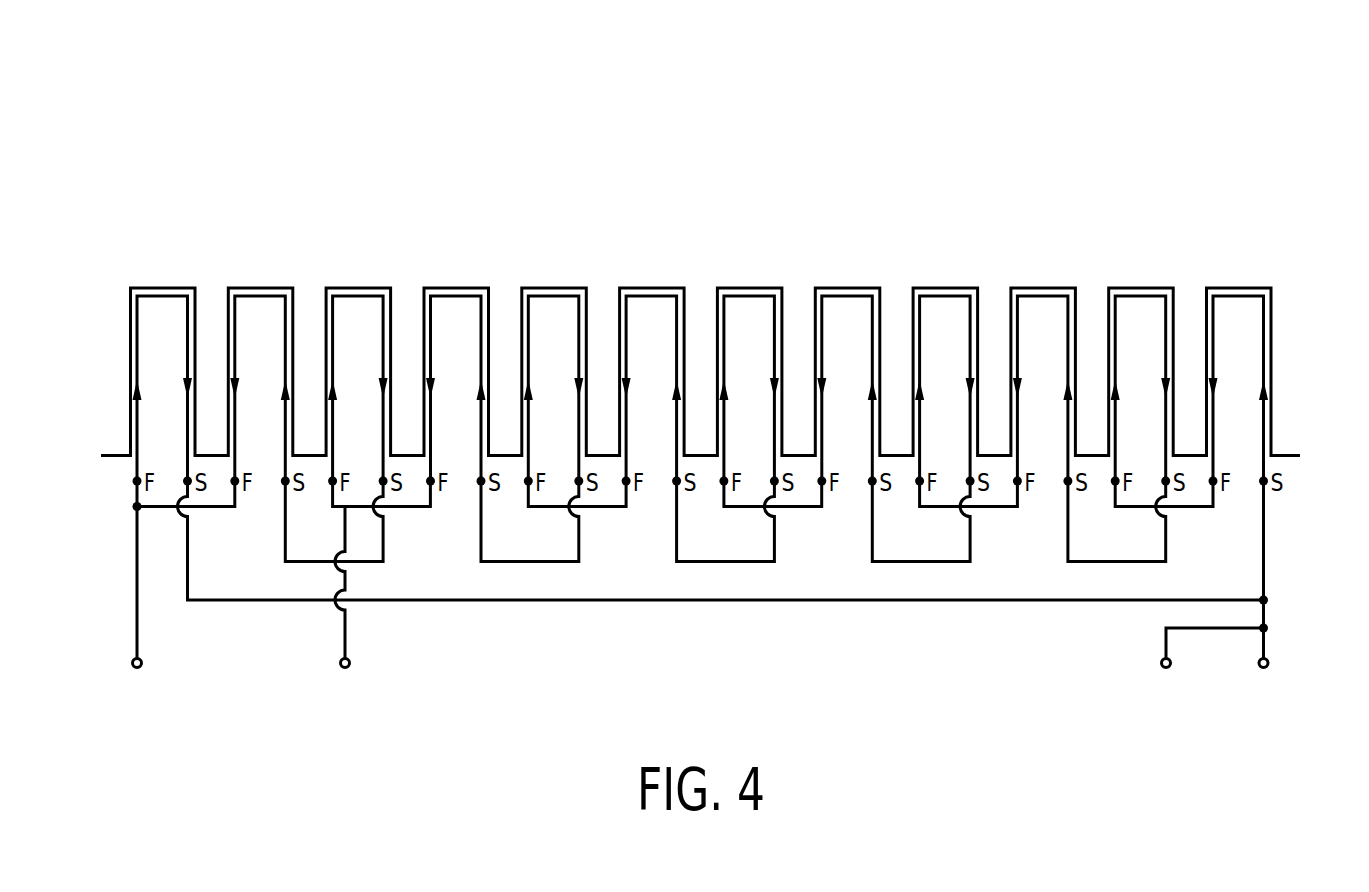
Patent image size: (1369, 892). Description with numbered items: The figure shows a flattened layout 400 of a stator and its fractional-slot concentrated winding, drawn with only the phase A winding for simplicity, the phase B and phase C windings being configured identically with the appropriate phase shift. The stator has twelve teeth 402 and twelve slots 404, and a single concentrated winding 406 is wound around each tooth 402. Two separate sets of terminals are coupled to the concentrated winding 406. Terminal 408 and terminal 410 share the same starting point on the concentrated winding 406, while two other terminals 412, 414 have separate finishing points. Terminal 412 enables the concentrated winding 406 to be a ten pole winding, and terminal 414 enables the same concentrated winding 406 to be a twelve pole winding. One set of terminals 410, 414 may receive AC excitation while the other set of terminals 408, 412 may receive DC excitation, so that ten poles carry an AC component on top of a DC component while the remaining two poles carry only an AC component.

The flattened layout 400 is at (701, 392).
The tooth 402 is at (1188, 322).
The slot 404 is at (1253, 322).
The concentrated winding 406 is at (1266, 528).
The terminal 408 is at (1161, 660).
The terminal 410 is at (1269, 661).
The terminal 412 is at (349, 660).
The terminal 414 is at (134, 659).